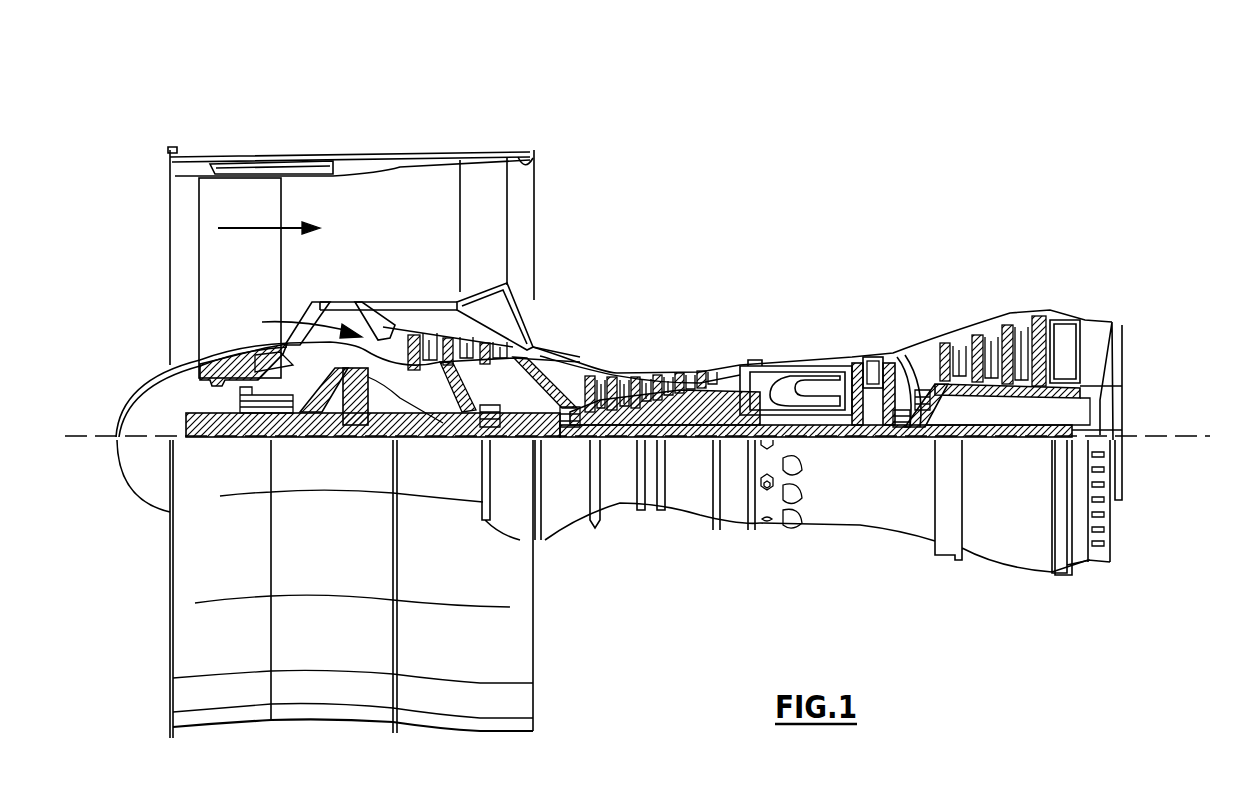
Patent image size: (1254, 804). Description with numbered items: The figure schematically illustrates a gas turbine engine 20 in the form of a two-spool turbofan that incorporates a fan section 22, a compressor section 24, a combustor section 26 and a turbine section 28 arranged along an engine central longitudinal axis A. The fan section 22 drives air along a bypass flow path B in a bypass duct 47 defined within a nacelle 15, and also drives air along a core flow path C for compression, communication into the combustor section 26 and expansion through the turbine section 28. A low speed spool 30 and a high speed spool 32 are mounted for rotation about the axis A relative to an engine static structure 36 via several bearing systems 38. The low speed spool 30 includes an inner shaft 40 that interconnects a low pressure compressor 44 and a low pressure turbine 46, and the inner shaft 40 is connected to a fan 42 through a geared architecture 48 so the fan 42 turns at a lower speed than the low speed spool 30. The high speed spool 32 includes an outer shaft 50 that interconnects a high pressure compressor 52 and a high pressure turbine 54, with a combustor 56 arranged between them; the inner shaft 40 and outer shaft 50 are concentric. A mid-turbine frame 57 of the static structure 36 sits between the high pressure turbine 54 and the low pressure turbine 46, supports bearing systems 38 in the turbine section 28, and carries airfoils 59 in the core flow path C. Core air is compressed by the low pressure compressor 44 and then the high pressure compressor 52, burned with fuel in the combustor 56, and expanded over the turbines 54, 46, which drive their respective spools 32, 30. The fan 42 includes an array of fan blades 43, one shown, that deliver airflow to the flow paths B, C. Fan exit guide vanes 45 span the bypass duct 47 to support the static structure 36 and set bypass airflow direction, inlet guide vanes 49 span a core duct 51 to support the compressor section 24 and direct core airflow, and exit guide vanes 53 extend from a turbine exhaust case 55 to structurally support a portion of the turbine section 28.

The nacelle 15 is at (353, 155).
The gas turbine engine 20 is at (654, 279).
The fan section 22 is at (282, 140).
The compressor section 24 is at (592, 335).
The combustor section 26 is at (806, 320).
The turbine section 28 is at (960, 290).
The low speed spool 30 is at (690, 455).
The high speed spool 32 is at (740, 395).
The engine static structure 36 is at (732, 538).
The bearing systems 38 is at (495, 438).
The inner shaft 40 is at (555, 445).
The fan 42 is at (258, 284).
The fan blades 43 is at (197, 293).
The low pressure compressor 44 is at (455, 328).
The fan exit guide vanes 45 is at (510, 210).
The low pressure turbine 46 is at (995, 340).
The bypass duct 47 is at (536, 160).
The geared architecture 48 is at (350, 438).
The inlet guide vanes 49 is at (302, 300).
The outer shaft 50 is at (820, 440).
The core duct 51 is at (358, 317).
The high pressure compressor 52 is at (662, 408).
The exit guide vanes 53 is at (1103, 348).
The high pressure turbine 54 is at (873, 358).
The turbine exhaust case 55 is at (1092, 562).
The combustor 56 is at (808, 380).
The mid-turbine frame 57 is at (922, 342).
The airfoils 59 is at (948, 398).
The engine central longitudinal axis A is at (1208, 436).
The bypass flow path B is at (252, 226).
The core flow path C is at (348, 408).